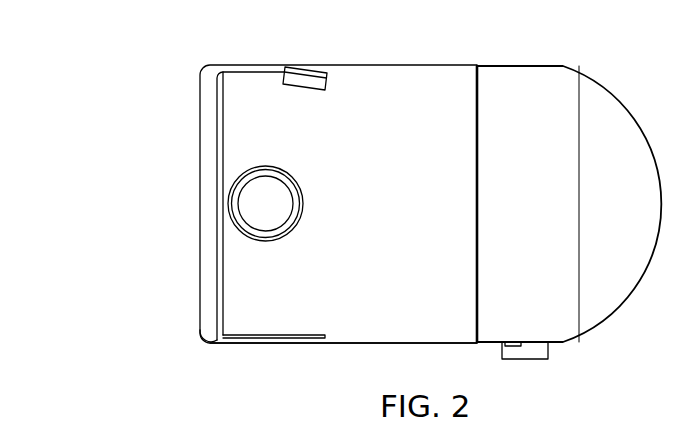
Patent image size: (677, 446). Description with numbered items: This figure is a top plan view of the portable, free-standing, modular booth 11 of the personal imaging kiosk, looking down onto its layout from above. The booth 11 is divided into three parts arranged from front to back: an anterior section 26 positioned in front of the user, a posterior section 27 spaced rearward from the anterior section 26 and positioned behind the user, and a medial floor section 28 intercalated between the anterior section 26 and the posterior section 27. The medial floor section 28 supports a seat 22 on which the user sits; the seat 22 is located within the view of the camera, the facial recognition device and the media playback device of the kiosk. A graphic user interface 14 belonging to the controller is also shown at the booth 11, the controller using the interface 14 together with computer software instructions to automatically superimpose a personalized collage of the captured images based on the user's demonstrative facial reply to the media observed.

The portable, free-standing, modular booth 11 is at (150, 123).
The graphic user interface 14 is at (323, 87).
The seat 22 is at (273, 198).
The anterior section 26 is at (552, 109).
The posterior section 27 is at (213, 180).
The medial floor section 28 is at (390, 333).